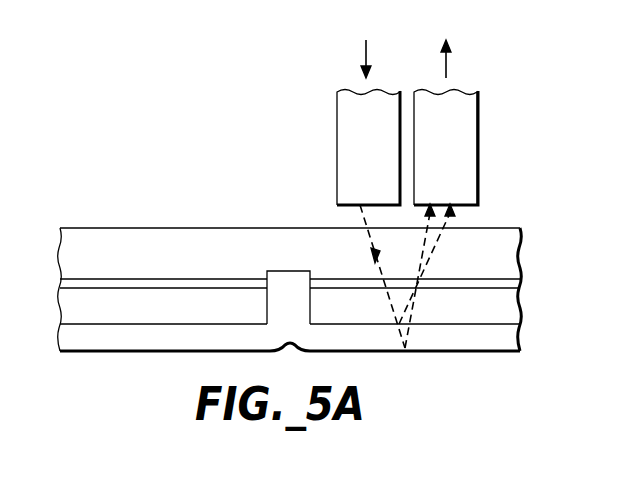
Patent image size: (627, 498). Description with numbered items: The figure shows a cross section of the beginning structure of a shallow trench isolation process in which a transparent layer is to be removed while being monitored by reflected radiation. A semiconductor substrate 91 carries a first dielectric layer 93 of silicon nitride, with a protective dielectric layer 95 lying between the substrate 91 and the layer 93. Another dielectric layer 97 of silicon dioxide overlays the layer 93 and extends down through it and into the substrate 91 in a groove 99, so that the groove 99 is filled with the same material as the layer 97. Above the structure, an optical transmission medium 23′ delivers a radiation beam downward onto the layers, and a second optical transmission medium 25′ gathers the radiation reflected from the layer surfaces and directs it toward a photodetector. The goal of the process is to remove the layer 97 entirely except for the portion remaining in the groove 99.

The optical transmission medium 23′ is at (345, 143).
The optical transmission medium 25′ is at (470, 143).
The semiconductor substrate 91 is at (314, 272).
The first dielectric layer 93 is at (512, 309).
The protective dielectric layer 95 is at (512, 278).
The dielectric layer 97 is at (512, 341).
The groove 99 is at (287, 288).